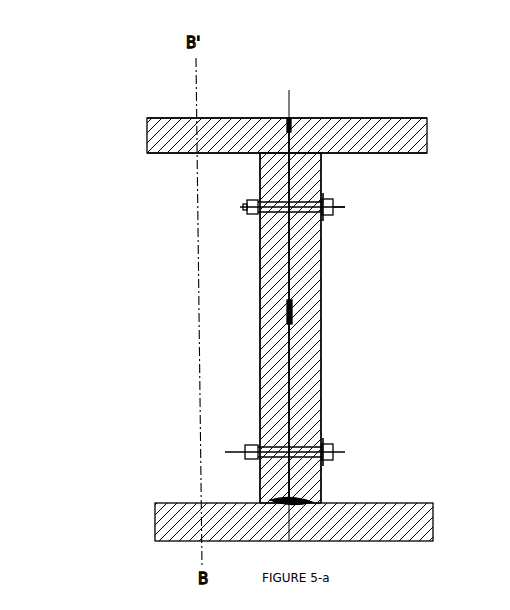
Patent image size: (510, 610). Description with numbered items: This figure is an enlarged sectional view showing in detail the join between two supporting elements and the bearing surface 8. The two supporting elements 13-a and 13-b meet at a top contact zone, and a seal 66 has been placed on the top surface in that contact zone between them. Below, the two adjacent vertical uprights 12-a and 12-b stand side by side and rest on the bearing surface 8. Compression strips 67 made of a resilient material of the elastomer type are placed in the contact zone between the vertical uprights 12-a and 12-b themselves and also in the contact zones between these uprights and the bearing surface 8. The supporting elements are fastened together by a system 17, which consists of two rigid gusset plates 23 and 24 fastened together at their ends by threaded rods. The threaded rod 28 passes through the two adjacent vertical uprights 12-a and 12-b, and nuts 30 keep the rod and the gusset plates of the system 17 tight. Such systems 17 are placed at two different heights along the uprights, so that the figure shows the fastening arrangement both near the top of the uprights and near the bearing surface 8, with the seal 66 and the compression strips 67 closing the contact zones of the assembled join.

The bearing surface 8 is at (178, 528).
The vertical upright 12-a is at (258, 311).
The vertical upright 12-b is at (323, 310).
The supporting element 13-a is at (186, 132).
The supporting element 13-b is at (405, 126).
The fastening system 17 is at (330, 215).
The rigid gusset plate 23 is at (257, 218).
The rigid gusset plate 24 is at (330, 185).
The threaded rod 28 is at (245, 205).
The nut 30 is at (256, 448).
The seal 66 is at (288, 114).
The compression strip 67 is at (308, 498).